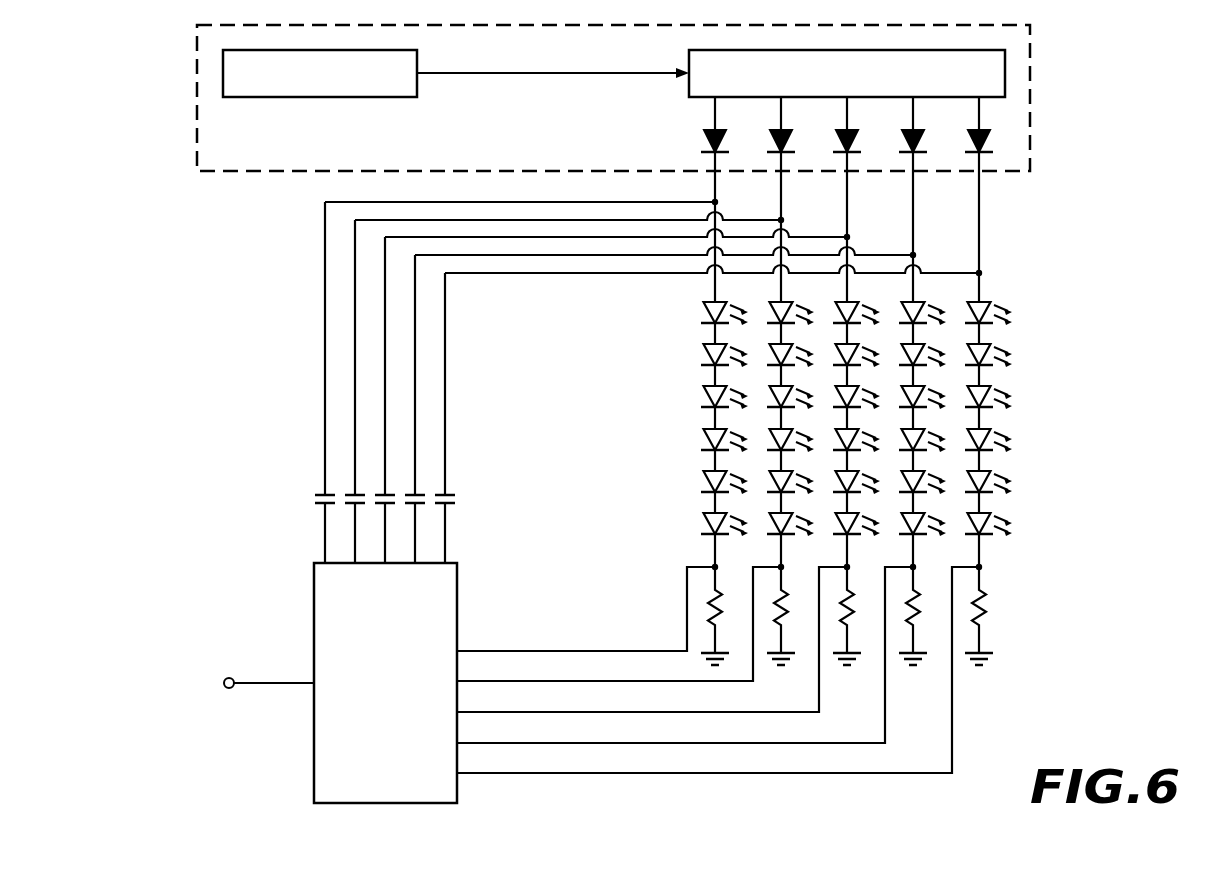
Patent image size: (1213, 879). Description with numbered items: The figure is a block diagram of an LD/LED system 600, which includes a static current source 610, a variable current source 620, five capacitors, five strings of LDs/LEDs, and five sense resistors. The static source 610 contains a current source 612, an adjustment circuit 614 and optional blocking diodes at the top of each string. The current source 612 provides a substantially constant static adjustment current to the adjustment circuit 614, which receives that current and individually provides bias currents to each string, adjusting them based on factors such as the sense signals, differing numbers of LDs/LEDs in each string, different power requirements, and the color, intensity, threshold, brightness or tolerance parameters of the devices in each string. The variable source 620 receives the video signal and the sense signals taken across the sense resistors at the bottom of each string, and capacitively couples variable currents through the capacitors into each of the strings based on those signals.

The LD/LED system 600 is at (1104, 79).
The static current source 610 is at (248, 173).
The current source 612 is at (279, 97).
The adjustment circuit 614 is at (689, 88).
The variable current source 620 is at (314, 637).